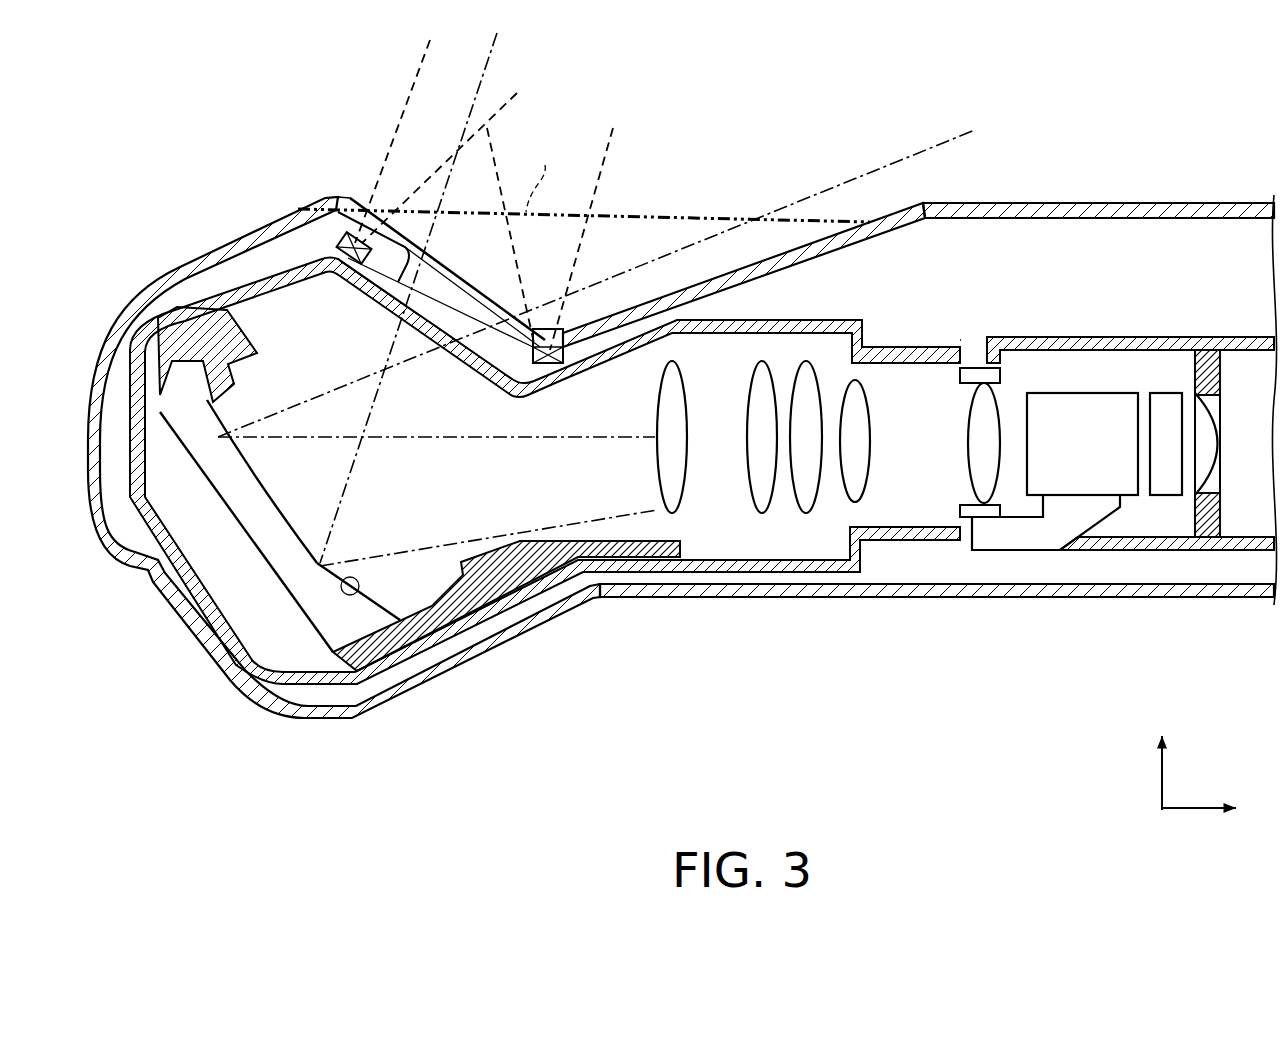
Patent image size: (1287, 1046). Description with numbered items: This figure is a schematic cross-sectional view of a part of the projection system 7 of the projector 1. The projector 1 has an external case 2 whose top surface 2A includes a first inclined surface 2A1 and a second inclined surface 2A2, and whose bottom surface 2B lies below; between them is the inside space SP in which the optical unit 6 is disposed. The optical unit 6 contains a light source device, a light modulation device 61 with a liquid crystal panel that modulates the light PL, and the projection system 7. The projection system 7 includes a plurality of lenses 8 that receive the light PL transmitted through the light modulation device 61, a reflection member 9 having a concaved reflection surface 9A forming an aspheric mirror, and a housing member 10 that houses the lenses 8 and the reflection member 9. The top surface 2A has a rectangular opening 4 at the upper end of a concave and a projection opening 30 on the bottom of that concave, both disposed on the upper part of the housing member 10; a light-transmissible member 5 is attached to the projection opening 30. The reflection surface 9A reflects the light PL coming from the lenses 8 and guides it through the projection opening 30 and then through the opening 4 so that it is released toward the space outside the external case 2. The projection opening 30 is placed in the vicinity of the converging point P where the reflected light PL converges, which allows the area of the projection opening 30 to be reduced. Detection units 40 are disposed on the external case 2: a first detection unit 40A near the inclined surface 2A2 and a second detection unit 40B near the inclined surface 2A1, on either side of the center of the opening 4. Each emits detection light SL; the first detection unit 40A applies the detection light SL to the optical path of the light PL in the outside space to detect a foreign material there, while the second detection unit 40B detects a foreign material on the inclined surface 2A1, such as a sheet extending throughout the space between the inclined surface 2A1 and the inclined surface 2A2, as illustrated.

The projector 1 is at (1017, 96).
The external case 2 is at (1043, 199).
The top surface 2A is at (1000, 201).
The first inclined surface 2A1 is at (352, 196).
The second inclined surface 2A2 is at (790, 250).
The bottom surface 2B is at (992, 600).
The opening 4 is at (468, 280).
The light-transmissible member 5 is at (400, 313).
The optical unit 6 is at (1082, 332).
The light modulation device 61 is at (1167, 392).
The projection system 7 is at (896, 321).
The lenses 8 is at (853, 503).
The reflection member 9 is at (365, 630).
The reflection surface 9A is at (358, 598).
The housing member 10 is at (547, 604).
The projection opening 30 is at (458, 344).
The detection units 40 is at (470, 249).
The first detection unit 40A is at (560, 330).
The second detection unit 40B is at (340, 243).
The detection light SL is at (612, 142).
The light PL is at (574, 431).
The converging point P is at (378, 440).
The inside space SP is at (1018, 304).